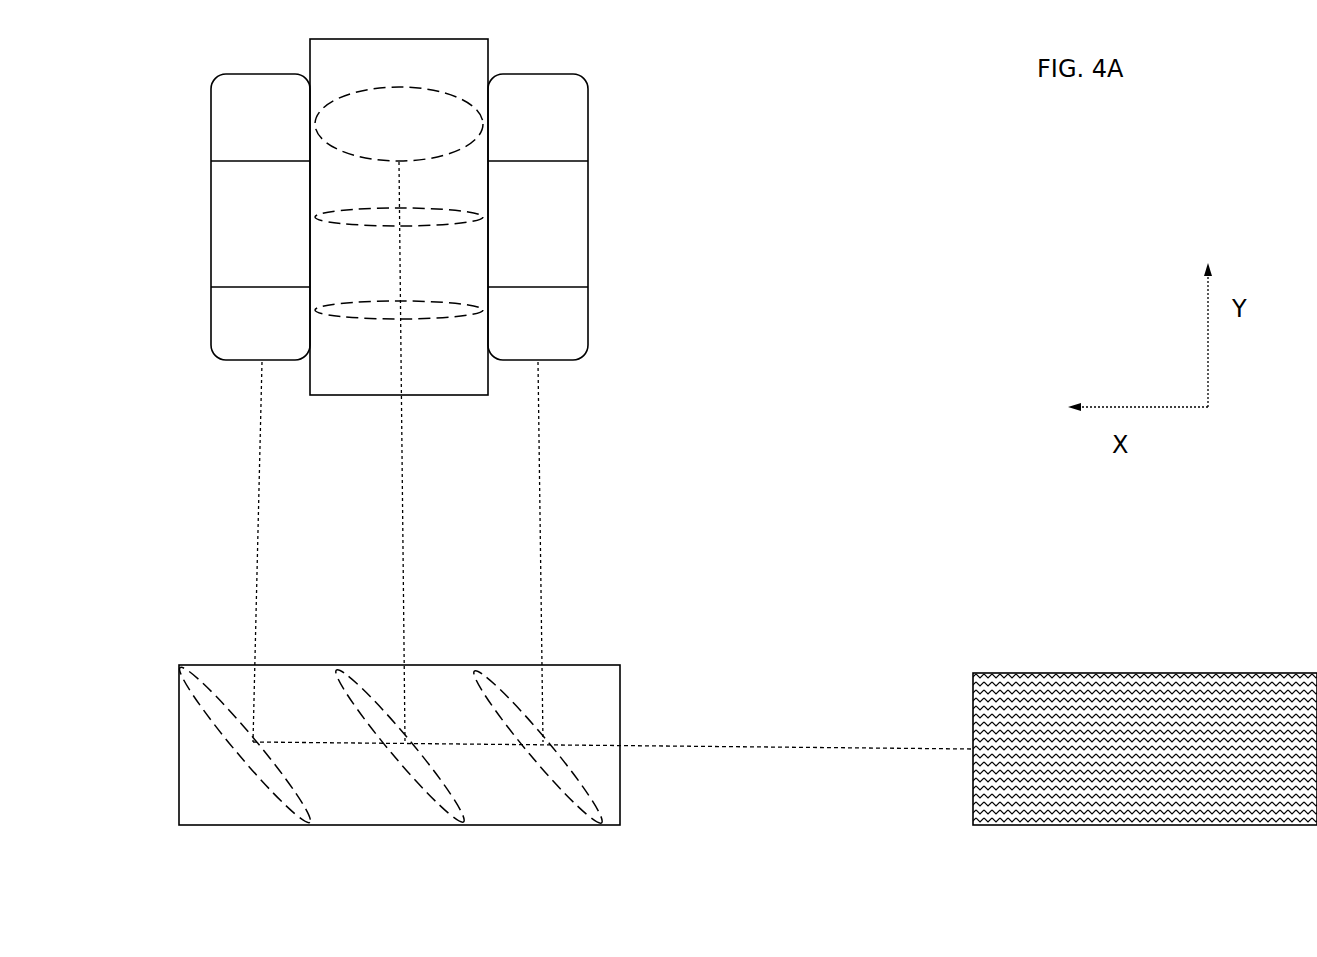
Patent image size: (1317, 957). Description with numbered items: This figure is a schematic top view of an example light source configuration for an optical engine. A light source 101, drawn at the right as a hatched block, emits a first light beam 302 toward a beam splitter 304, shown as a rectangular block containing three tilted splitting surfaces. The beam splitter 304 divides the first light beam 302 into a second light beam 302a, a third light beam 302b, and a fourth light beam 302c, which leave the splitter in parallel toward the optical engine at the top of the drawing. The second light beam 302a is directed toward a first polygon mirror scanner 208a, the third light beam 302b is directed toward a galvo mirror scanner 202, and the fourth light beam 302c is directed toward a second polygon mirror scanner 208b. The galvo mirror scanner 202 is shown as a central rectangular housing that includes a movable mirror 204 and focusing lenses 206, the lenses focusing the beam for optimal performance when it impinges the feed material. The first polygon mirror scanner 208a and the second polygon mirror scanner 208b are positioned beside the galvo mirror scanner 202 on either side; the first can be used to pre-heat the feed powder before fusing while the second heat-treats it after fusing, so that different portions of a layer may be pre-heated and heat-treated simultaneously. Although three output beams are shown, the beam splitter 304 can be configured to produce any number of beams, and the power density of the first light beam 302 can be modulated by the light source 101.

The light source 101 is at (1182, 765).
The galvo mirror scanner 202 is at (405, 34).
The movable mirror 204 is at (427, 141).
The focusing lenses 206 is at (433, 356).
The first polygon mirror scanner 208a is at (212, 217).
The second polygon mirror scanner 208b is at (590, 232).
The first light beam 302 is at (788, 748).
The second light beam 302a is at (256, 565).
The third light beam 302b is at (405, 520).
The fourth light beam 302c is at (542, 538).
The beam splitter 304 is at (660, 804).